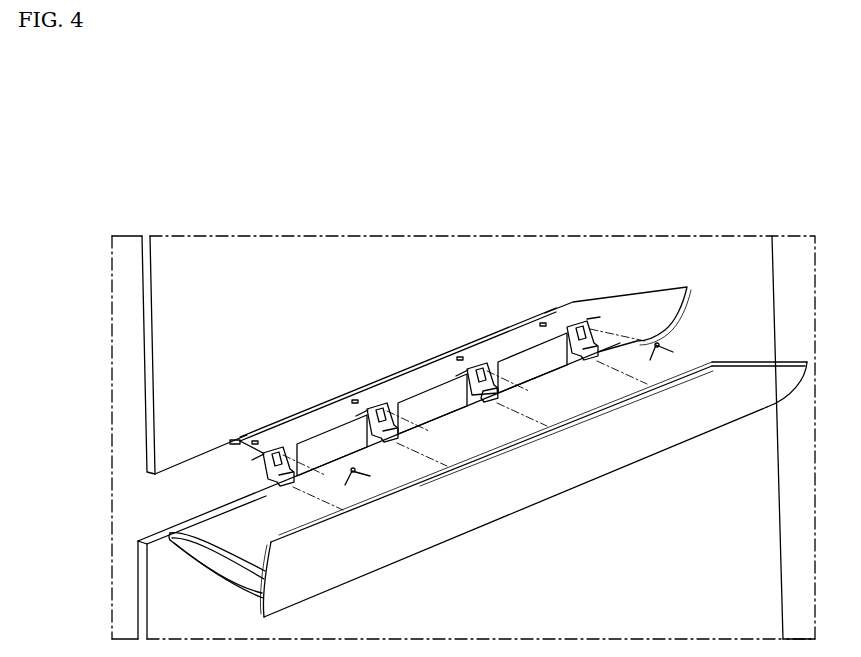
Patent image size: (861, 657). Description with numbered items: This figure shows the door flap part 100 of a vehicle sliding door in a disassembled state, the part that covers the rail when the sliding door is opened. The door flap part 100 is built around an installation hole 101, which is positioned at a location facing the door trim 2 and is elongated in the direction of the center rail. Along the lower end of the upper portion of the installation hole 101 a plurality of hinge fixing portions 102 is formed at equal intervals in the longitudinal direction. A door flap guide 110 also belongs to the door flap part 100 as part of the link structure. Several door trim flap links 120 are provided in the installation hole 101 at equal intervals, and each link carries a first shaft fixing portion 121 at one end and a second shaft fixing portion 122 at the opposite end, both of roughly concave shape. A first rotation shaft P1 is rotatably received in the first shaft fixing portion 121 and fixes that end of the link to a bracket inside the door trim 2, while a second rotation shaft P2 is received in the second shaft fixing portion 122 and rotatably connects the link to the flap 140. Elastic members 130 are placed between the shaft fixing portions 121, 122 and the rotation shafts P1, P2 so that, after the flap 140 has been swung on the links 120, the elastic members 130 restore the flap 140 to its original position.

The door trim 2 is at (728, 257).
The door flap part 100 is at (238, 262).
The installation hole 101 is at (177, 504).
The hinge fixing portions 102 is at (266, 428).
The door flap guide 110 is at (222, 574).
The door trim flap links 120 is at (471, 360).
The first shaft fixing portion 121 is at (478, 360).
The second shaft fixing portion 122 is at (498, 397).
The elastic members 130 is at (362, 468).
The flap 140 is at (493, 495).
The first rotation shaft P1 is at (322, 438).
The second rotation shaft P2 is at (433, 403).